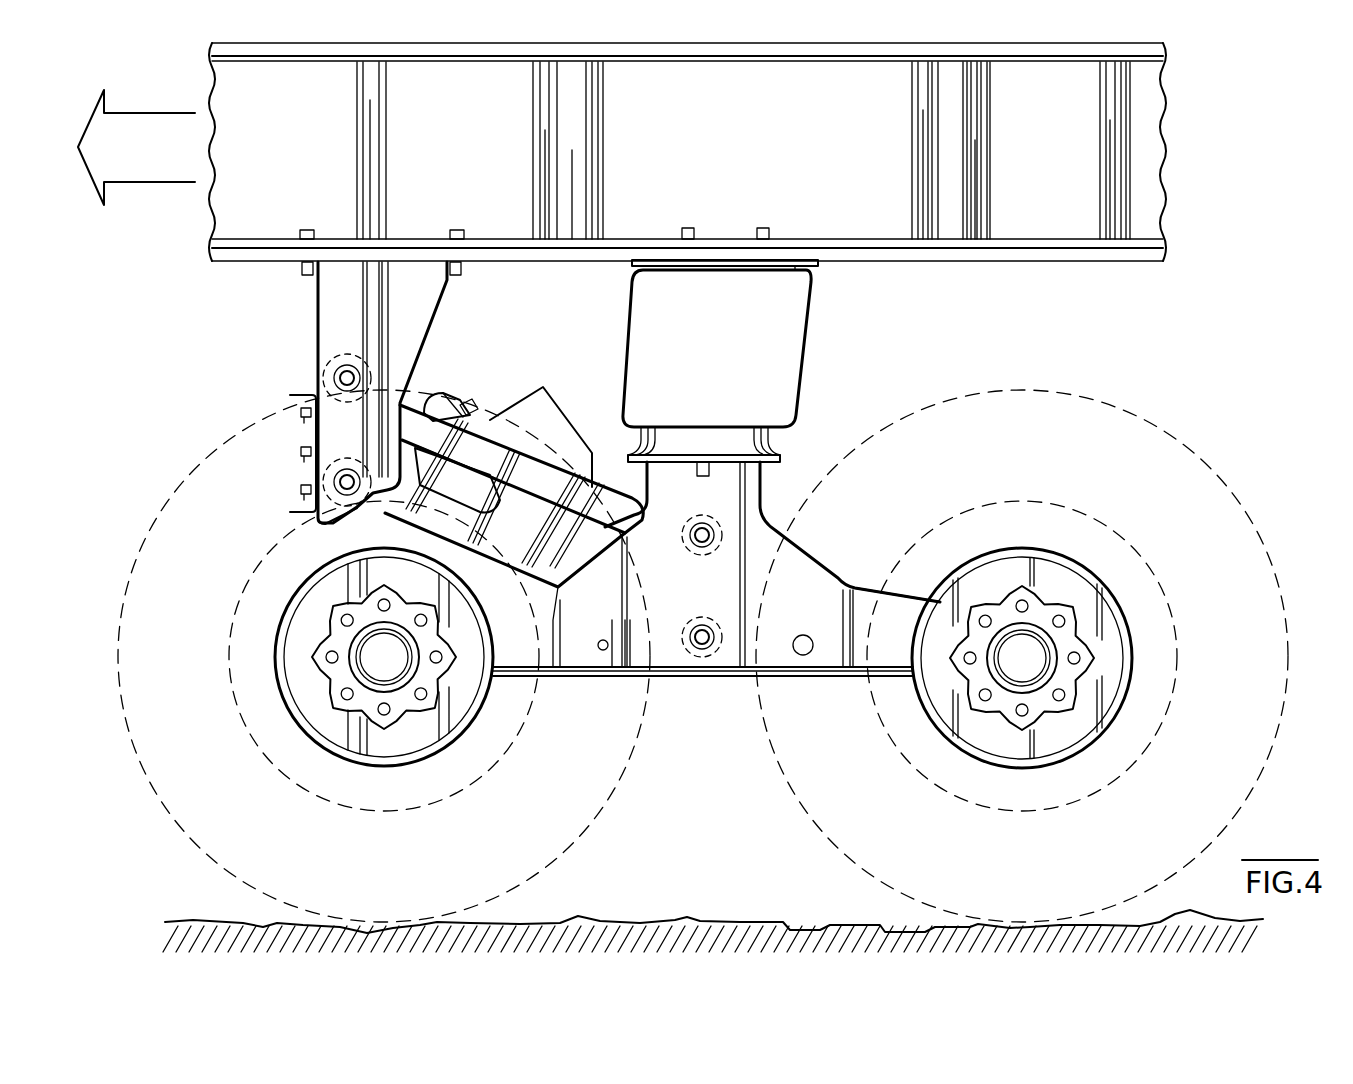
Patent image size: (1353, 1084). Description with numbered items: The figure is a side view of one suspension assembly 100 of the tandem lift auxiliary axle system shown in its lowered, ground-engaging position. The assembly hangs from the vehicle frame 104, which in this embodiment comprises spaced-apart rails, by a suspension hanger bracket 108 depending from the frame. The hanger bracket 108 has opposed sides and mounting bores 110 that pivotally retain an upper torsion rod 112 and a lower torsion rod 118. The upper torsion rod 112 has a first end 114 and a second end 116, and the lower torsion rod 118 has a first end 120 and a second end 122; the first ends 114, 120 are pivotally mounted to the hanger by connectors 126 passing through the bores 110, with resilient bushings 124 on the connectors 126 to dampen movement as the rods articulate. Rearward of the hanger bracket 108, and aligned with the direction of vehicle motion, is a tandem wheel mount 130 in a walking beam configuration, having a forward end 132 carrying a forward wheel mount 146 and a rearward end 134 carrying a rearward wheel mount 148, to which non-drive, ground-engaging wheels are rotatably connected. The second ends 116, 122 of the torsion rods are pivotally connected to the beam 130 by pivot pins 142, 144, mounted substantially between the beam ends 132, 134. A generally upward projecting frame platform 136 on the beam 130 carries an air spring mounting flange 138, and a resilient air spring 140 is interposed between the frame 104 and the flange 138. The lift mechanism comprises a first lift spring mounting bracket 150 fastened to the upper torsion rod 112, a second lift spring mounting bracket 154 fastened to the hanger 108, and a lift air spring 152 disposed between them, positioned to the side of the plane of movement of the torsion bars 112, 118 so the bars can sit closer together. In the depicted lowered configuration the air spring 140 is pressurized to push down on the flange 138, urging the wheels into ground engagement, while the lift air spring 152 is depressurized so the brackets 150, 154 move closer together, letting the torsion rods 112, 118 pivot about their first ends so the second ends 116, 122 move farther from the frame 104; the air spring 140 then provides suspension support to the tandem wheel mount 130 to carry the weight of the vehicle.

The suspension assembly 100 is at (1111, 348).
The vehicle frame 104 is at (1112, 258).
The suspension hanger bracket 108 is at (320, 303).
The mounting bores 110 is at (284, 402).
The upper torsion rod 112 is at (493, 463).
The first end of upper torsion rod 114 is at (296, 447).
The second end of upper torsion rod 116 is at (763, 478).
The lower torsion rod 118 is at (526, 553).
The first end of lower torsion rod 120 is at (318, 520).
The second end of lower torsion rod 122 is at (675, 672).
The resilient bushings 124 is at (325, 368).
The connectors 126 is at (338, 480).
The tandem wheel mount 130 is at (840, 580).
The forward end 132 is at (437, 662).
The rearward end 134 is at (971, 678).
The frame platform 136 is at (707, 567).
The air spring mounting flange 138 is at (777, 445).
The air spring 140 is at (790, 350).
The pivot pin 142 is at (720, 540).
The pivot pin 144 is at (720, 655).
The forward wheel mount 146 is at (442, 681).
The rearward wheel mount 148 is at (974, 697).
The first lift spring mounting bracket 150 is at (570, 452).
The lift air spring 152 is at (438, 400).
The second lift spring mounting bracket 154 is at (372, 520).